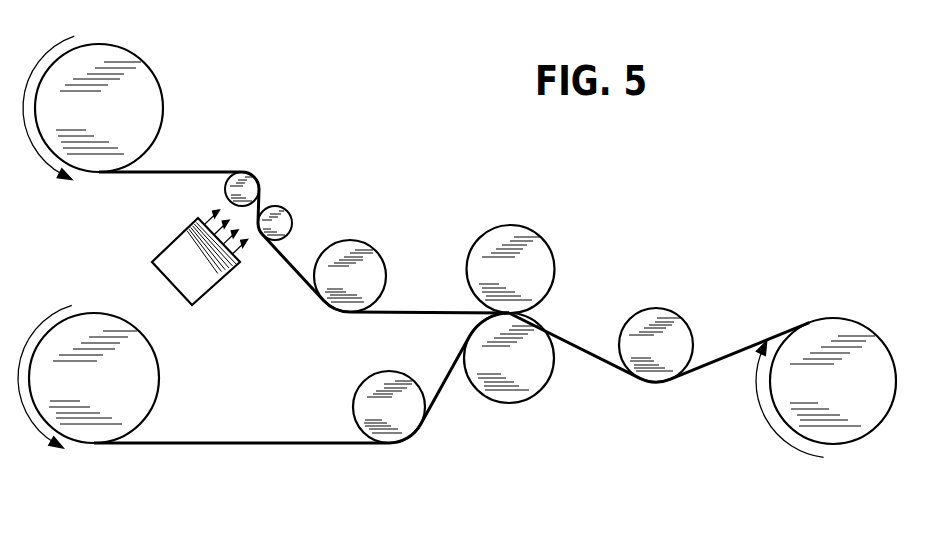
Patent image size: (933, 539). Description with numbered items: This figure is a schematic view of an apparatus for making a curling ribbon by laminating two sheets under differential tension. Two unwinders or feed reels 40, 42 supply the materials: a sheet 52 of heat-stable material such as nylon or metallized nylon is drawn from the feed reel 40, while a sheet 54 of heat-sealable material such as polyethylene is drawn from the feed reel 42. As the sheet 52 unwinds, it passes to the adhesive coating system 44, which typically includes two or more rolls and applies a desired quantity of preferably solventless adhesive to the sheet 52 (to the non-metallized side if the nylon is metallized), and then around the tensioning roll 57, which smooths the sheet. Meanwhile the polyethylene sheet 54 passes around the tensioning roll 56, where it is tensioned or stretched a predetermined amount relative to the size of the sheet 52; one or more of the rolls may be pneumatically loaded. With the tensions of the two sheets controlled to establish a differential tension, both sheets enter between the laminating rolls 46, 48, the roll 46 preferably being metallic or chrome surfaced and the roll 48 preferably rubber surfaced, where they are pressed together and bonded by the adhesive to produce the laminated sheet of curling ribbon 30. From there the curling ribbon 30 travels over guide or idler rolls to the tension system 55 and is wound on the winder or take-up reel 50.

The laminated sheet of curling ribbon 30 is at (765, 335).
The feed reel 40 is at (110, 78).
The feed reel 42 is at (140, 395).
The adhesive coating system 44 is at (172, 280).
The laminating roll 46 is at (517, 390).
The laminating roll 48 is at (505, 238).
The take-up reel 50 is at (843, 437).
The sheet of heat-stable material 52 is at (188, 172).
The sheet of heat-sealable material 54 is at (243, 447).
The tensioning roll 55 is at (658, 317).
The tensioning roll 56 is at (355, 412).
The tensioning roll 57 is at (343, 250).